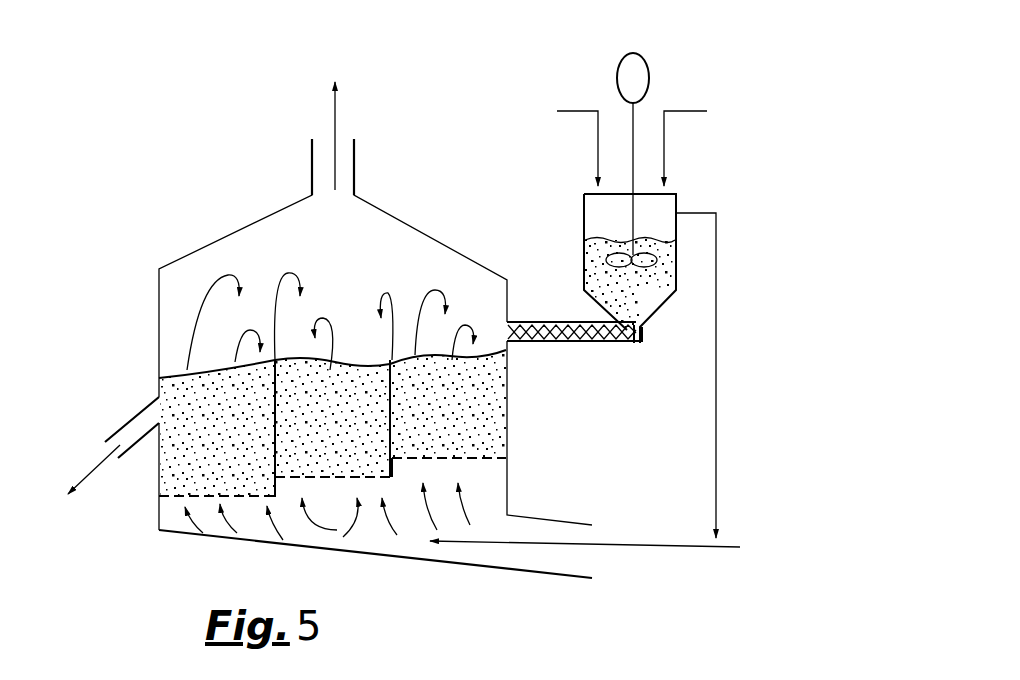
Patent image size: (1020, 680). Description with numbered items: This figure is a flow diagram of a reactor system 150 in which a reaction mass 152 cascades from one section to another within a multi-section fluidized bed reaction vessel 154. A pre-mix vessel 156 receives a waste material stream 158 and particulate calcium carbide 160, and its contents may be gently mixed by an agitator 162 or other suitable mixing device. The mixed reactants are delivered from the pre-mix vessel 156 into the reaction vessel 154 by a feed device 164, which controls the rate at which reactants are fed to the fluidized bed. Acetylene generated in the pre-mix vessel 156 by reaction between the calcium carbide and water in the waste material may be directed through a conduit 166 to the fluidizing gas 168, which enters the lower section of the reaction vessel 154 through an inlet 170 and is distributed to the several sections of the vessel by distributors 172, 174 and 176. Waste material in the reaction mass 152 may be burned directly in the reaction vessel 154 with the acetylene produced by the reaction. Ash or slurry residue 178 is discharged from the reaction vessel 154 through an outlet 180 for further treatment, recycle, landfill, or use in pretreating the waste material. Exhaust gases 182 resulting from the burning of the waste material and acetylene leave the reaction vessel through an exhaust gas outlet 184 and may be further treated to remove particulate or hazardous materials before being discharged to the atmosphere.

The reactor system 150 is at (116, 542).
The reaction mass 152 is at (497, 421).
The multi-section fluidized bed reaction vessel 154 is at (159, 309).
The pre-mix vessel 156 is at (584, 231).
The waste material stream 158 is at (575, 110).
The particulate calcium carbide 160 is at (685, 110).
The agitator 162 is at (638, 53).
The feed device 164 is at (590, 343).
The conduit 166 is at (704, 213).
The fluidizing gas 168 is at (645, 546).
The inlet 170 is at (460, 566).
The distributor 172 is at (470, 462).
The distributor 174 is at (338, 478).
The distributor 176 is at (172, 498).
The ash or slurry residue 178 is at (86, 477).
The outlet 180 is at (129, 424).
The exhaust gases 182 is at (332, 110).
The exhaust gas outlet 184 is at (311, 160).